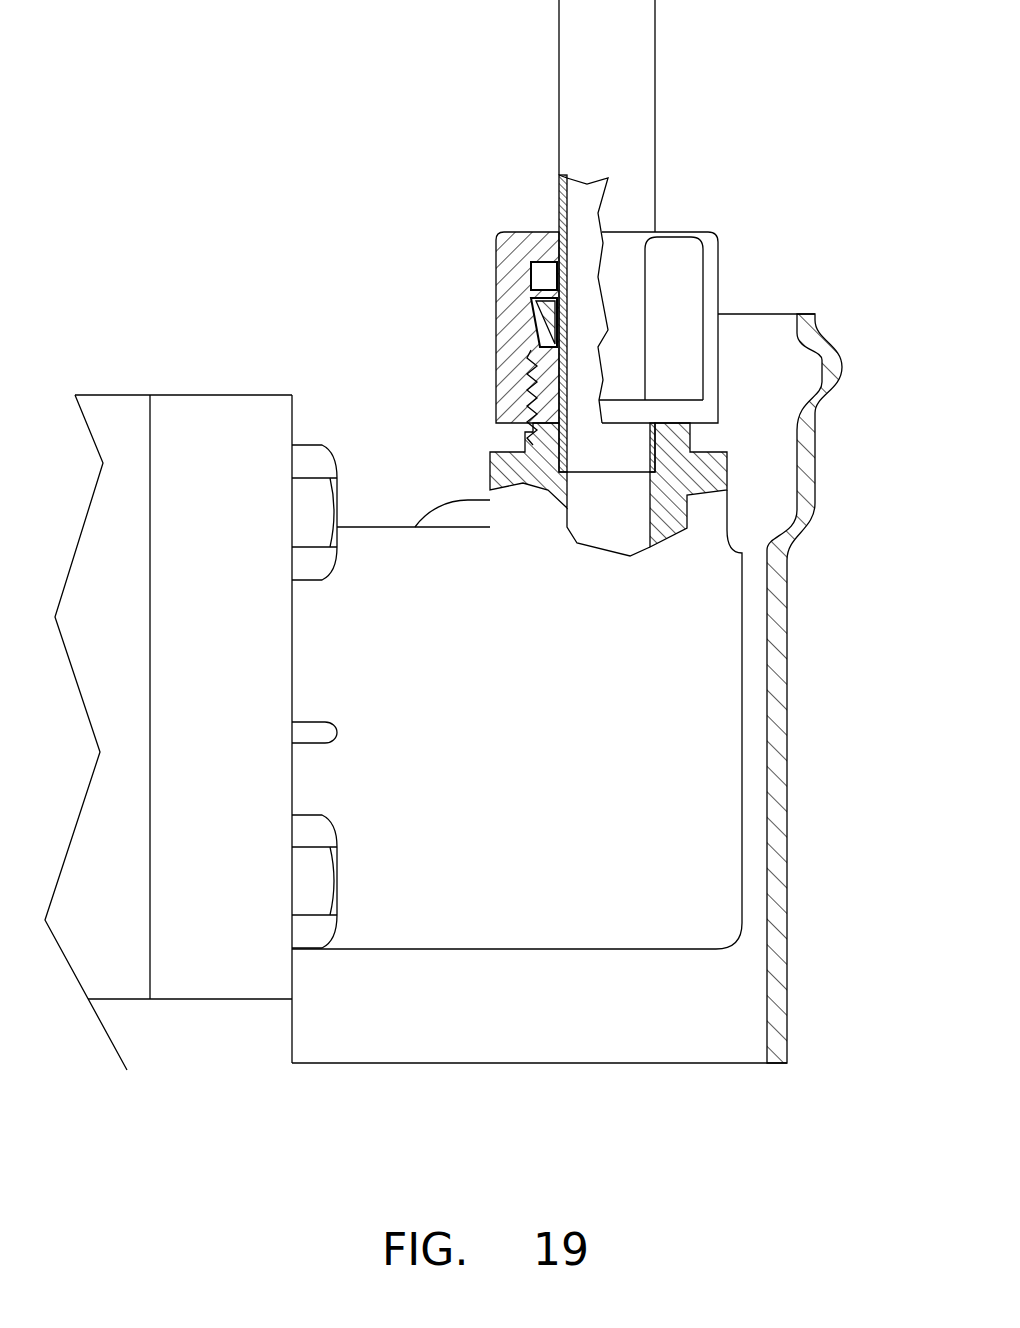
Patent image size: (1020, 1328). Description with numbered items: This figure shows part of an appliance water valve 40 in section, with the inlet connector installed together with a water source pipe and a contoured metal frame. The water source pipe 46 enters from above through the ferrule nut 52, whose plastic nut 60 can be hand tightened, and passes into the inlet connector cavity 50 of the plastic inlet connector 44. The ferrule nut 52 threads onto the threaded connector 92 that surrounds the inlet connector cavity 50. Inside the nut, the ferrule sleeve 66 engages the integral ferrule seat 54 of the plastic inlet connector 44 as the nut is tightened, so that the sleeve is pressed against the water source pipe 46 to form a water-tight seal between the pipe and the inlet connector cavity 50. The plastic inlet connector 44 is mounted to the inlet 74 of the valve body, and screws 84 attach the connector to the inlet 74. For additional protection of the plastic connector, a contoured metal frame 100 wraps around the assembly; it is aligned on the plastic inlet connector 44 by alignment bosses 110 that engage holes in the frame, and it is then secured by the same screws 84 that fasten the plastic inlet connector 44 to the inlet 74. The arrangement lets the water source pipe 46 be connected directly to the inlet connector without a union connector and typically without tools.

The appliance water valve 40 is at (218, 165).
The plastic inlet connector 44 is at (405, 553).
The water source pipe 46 is at (635, 132).
The inlet connector cavity 50 is at (623, 518).
The ferrule nut 52 is at (482, 220).
The ferrule seat 54 is at (548, 322).
The plastic nut 60 is at (687, 282).
The ferrule sleeve 66 is at (540, 292).
The inlet 74 is at (110, 980).
The screws 84 is at (337, 543).
The threaded connector 92 is at (690, 443).
The contoured metal frame 100 is at (787, 783).
The alignment bosses 110 is at (327, 737).